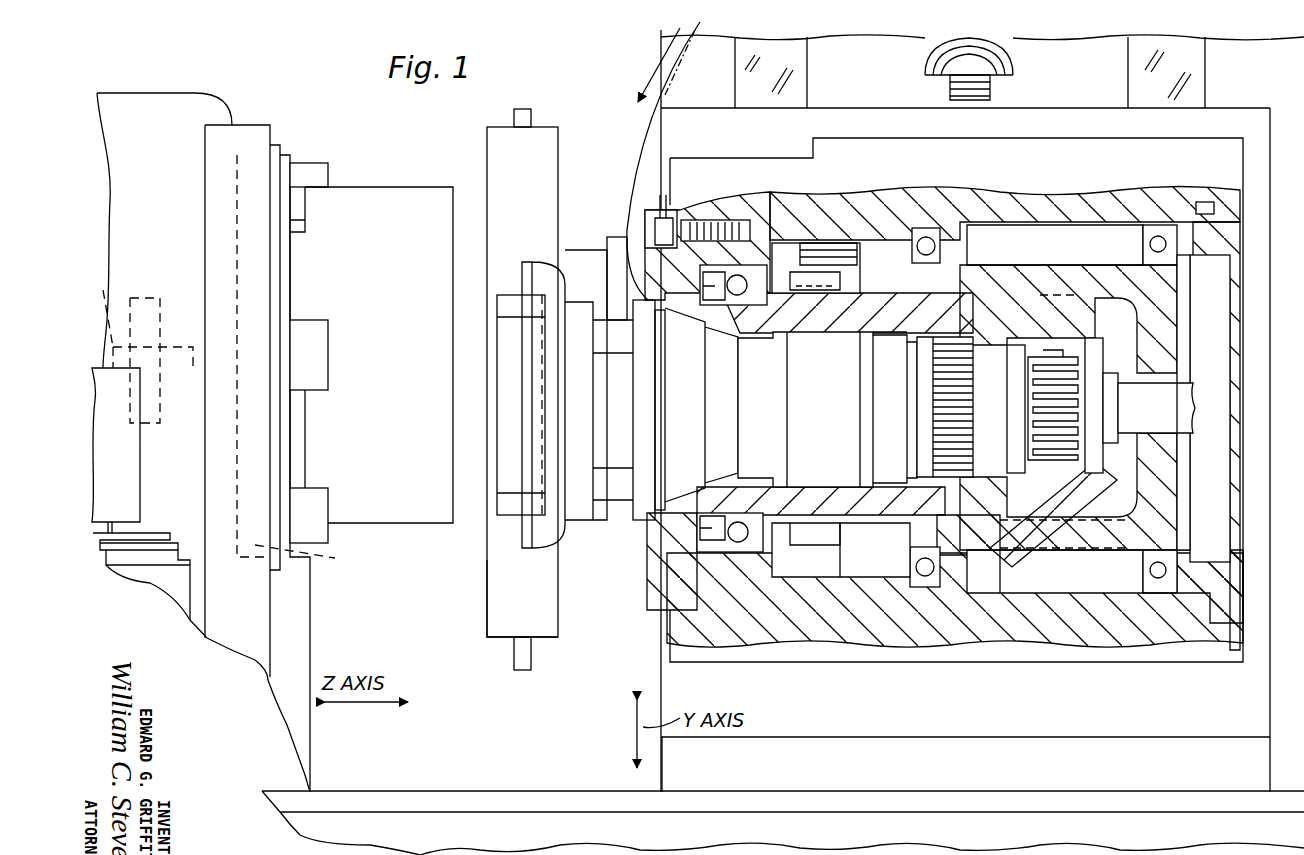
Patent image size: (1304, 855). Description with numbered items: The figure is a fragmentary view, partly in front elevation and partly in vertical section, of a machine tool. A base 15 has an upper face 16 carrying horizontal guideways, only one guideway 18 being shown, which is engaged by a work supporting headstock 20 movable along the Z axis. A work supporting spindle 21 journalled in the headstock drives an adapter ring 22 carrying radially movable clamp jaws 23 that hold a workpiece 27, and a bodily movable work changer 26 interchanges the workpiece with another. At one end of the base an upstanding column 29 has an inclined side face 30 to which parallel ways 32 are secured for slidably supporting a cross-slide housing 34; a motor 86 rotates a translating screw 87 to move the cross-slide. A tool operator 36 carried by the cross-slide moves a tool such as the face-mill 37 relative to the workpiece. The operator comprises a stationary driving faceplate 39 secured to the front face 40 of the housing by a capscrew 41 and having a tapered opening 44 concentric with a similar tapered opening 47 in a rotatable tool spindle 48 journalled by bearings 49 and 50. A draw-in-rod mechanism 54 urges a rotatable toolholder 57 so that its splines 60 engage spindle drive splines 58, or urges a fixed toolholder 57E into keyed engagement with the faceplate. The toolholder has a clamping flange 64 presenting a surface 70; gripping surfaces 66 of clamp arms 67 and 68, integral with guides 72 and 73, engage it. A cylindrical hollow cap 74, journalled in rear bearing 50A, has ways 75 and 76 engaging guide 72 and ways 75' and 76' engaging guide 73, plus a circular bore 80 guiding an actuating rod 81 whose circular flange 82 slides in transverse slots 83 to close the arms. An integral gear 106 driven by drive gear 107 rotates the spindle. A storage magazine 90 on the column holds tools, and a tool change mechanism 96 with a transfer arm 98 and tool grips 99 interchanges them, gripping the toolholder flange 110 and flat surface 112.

The base 15 is at (862, 838).
The upper face 16 is at (502, 785).
The guideway 18 is at (330, 800).
The work supporting headstock 20 is at (164, 230).
The work supporting spindle 21 is at (201, 528).
The adapter ring 22 is at (309, 560).
The clamp jaws 23 is at (302, 160).
The work changer 26 is at (238, 125).
The workpiece 27 is at (408, 518).
The column 29 is at (965, 411).
The side face 30 is at (982, 71).
The ways 32 is at (797, 77).
The cross-slide housing 34 is at (1112, 237).
The tool operator 36 is at (637, 532).
The face-mill 37 is at (545, 286).
The driving faceplate 39 is at (658, 267).
The front face 40 is at (672, 657).
The capscrew 41 is at (663, 200).
The tapered opening 44 is at (680, 325).
The tapered opening 47 is at (718, 488).
The tool spindle 48 is at (854, 550).
The bearing 49 is at (715, 243).
The bearing 50 is at (910, 580).
The rear bearing 50A is at (1145, 595).
The draw-in-rod mechanism 54 is at (1192, 510).
The toolholder 57 is at (827, 409).
The toolholder 57E is at (578, 263).
The drive splines 58 is at (927, 360).
The toolholder splines 60 is at (955, 413).
The clamping flange 64 is at (1015, 396).
The gripping surfaces 66 is at (1016, 409).
The clamp arm 67 is at (1068, 407).
The clamp arm 68 is at (1013, 568).
The surface 70 is at (1010, 430).
The clamp guide 72 is at (1064, 260).
The clamp guide 73 is at (1060, 514).
The cylindrical hollow cap 74 is at (1170, 295).
The way 75 is at (954, 245).
The way 75' is at (943, 586).
The way 76 is at (1135, 247).
The way 76' is at (1129, 571).
The circular bore 80 is at (1155, 428).
The actuating rod 81 is at (1183, 400).
The circular flange 82 is at (1097, 362).
The transverse slots 83 is at (1108, 392).
The motor 86 is at (1013, 37).
The translating screw 87 is at (947, 87).
The storage magazine 90 is at (643, 127).
The tool change mechanism 96 is at (484, 158).
The transfer arm 98 is at (495, 632).
The tool grips 99 is at (531, 114).
The gear 106 is at (795, 538).
The drive gear 107 is at (813, 253).
The toolholder flange 110 is at (623, 512).
The flat surface 112 is at (613, 410).